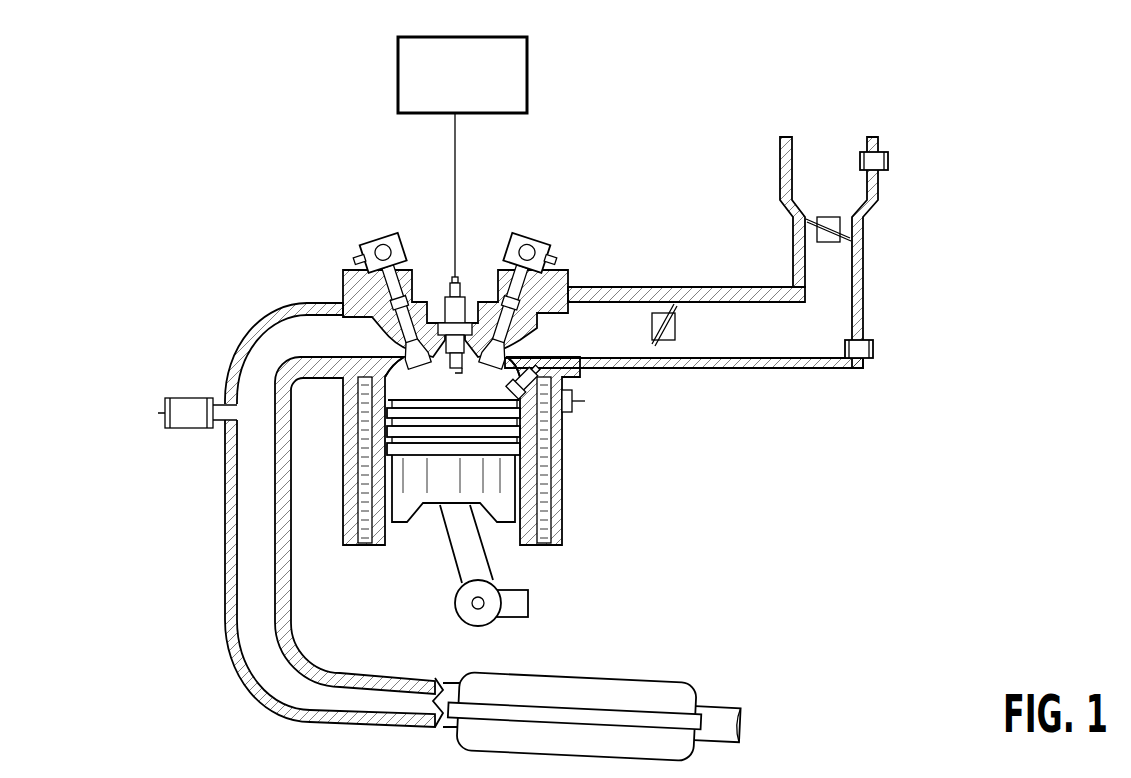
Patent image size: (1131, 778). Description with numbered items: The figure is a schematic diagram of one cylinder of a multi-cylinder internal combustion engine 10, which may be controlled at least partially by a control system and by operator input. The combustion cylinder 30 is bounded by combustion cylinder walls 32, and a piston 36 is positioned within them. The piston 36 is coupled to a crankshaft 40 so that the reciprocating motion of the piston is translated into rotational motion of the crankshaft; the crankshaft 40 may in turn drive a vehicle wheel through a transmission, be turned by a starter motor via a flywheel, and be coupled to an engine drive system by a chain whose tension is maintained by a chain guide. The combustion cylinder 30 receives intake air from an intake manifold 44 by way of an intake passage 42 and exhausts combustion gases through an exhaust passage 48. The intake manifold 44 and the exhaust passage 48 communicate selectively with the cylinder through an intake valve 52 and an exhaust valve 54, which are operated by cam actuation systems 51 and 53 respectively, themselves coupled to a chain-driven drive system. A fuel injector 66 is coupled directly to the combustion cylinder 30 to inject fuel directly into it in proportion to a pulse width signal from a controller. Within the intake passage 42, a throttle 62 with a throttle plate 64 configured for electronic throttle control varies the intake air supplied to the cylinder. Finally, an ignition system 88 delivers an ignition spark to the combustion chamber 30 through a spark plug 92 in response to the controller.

The internal combustion engine 10 is at (268, 214).
The combustion cylinder 30 is at (433, 378).
The combustion cylinder walls 32 is at (384, 528).
The piston 36 is at (434, 488).
The crankshaft 40 is at (463, 623).
The intake passage 42 is at (838, 190).
The intake manifold 44 is at (772, 340).
The exhaust passage 48 is at (318, 347).
The cam actuation system 51 is at (537, 222).
The intake valve 52 is at (503, 353).
The cam actuation system 53 is at (368, 222).
The exhaust valve 54 is at (403, 352).
The throttle 62 is at (838, 222).
The throttle plate 64 is at (808, 224).
The fuel injector 66 is at (545, 370).
The ignition system 88 is at (527, 57).
The spark plug 92 is at (453, 310).